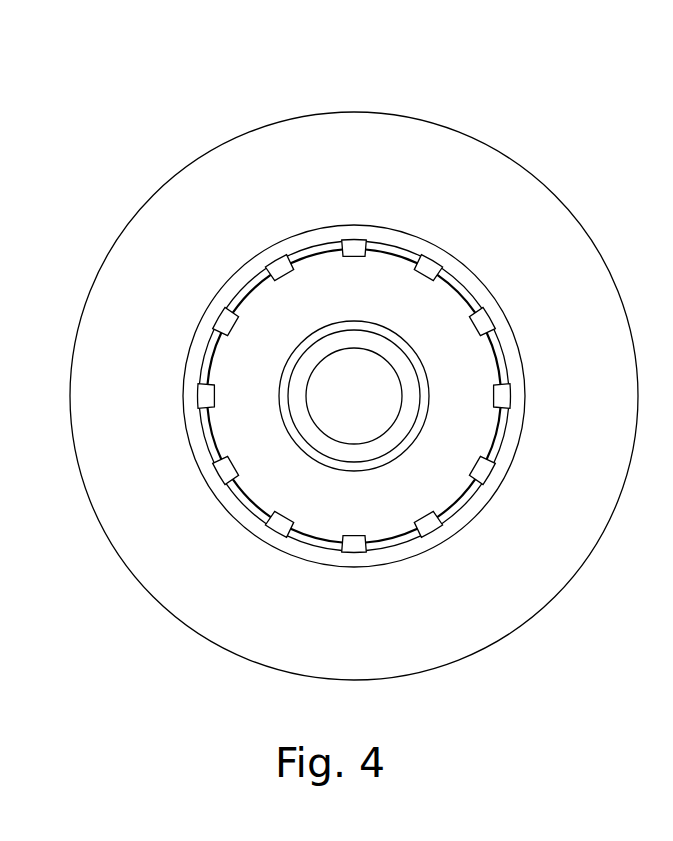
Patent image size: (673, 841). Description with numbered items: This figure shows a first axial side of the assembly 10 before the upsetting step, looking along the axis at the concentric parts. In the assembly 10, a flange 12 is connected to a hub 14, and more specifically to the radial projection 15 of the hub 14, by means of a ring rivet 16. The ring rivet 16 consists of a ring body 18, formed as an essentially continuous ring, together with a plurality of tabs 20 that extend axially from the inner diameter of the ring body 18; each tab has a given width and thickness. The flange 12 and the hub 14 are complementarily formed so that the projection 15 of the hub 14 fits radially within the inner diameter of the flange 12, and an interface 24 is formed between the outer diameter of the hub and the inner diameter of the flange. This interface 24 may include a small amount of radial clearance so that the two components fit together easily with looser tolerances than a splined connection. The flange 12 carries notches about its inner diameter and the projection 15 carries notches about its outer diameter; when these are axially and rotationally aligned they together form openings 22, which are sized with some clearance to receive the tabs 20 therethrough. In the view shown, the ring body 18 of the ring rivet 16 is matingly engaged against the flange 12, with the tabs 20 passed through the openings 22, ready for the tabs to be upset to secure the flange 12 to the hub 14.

The assembly 10 is at (574, 110).
The flange 12 is at (437, 616).
The hub 14 is at (310, 455).
The radial projection 15 is at (237, 423).
The ring rivet 16 is at (515, 247).
The ring body 18 is at (393, 240).
The tabs 20 is at (278, 263).
The openings 22 is at (14, 373).
The interface 24 is at (236, 277).